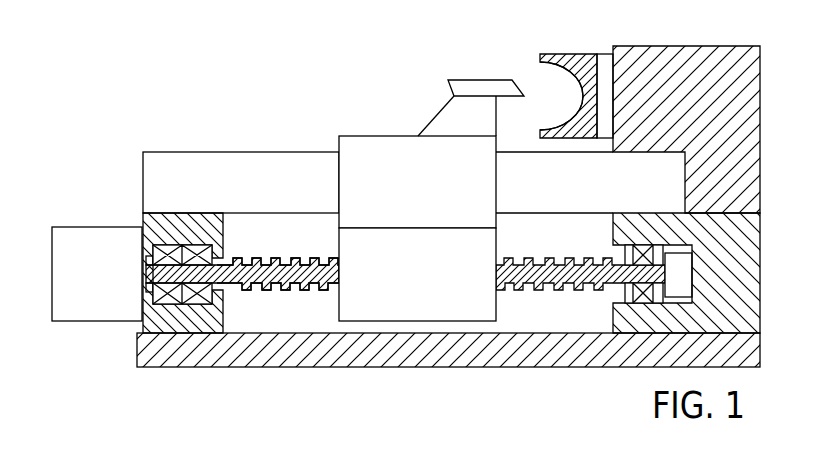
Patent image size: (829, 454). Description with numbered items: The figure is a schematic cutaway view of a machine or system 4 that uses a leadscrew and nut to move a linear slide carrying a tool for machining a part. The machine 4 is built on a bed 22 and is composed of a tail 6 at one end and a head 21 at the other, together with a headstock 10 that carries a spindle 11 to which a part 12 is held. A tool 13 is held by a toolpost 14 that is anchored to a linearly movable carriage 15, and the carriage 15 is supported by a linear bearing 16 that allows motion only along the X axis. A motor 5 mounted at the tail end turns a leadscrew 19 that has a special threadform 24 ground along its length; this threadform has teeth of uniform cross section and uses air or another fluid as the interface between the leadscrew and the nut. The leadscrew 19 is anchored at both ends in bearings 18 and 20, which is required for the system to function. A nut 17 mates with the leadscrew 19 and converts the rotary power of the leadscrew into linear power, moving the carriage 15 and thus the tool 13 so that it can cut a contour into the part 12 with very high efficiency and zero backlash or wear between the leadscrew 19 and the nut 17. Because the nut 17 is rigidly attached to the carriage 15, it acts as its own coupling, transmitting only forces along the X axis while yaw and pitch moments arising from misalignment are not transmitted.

The machine or system 4 is at (149, 126).
The motor 5 is at (99, 312).
The tail 6 is at (142, 220).
The headstock 10 is at (763, 139).
The spindle 11 is at (609, 52).
The part 12 is at (531, 73).
The tool 13 is at (468, 84).
The toolpost 14 is at (438, 121).
The carriage 15 is at (353, 143).
The linear bearing 16 is at (236, 169).
The nut 17 is at (421, 303).
The bearing 18 is at (193, 304).
The leadscrew 19 is at (267, 258).
The bearing 20 is at (633, 263).
The head 21 is at (761, 290).
The bed 22 is at (253, 362).
The threadform 24 is at (299, 290).